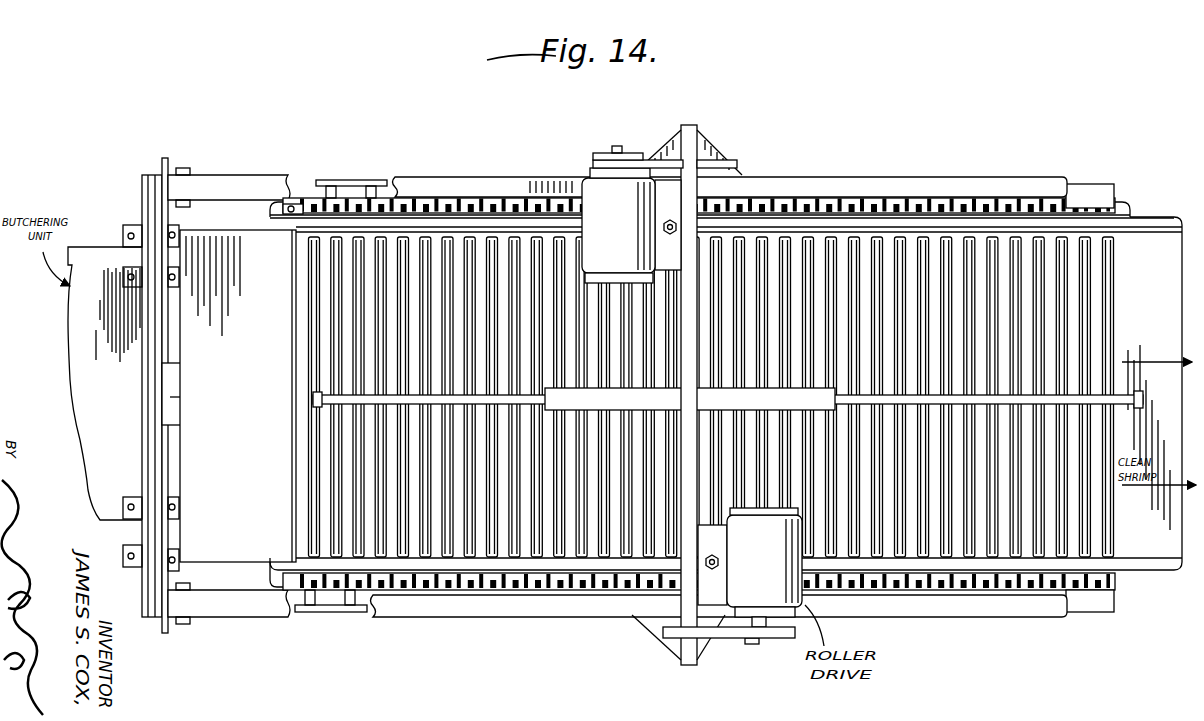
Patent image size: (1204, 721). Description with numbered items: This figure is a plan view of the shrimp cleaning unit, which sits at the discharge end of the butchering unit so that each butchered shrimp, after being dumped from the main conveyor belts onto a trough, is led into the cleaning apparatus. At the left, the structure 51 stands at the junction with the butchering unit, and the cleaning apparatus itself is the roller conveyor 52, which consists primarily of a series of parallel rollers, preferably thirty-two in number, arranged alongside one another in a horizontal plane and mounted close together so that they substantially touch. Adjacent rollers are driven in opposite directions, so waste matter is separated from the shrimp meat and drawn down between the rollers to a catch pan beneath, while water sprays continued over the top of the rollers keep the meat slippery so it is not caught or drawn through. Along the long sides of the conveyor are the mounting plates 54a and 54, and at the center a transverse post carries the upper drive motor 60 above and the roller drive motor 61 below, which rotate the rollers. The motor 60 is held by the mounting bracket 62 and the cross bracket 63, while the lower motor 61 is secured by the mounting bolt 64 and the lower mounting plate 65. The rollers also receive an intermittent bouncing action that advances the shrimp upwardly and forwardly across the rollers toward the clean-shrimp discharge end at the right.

The feed chute / support stand 51 is at (252, 562).
The roller conveyor 52 is at (355, 300).
The lower mounting plate 54 is at (341, 610).
The upper mounting plate 54a is at (348, 180).
The upper drive motor 60 is at (631, 225).
The roller drive motor 61 is at (750, 562).
The motor mounting bracket 62 is at (650, 160).
The cross bracket 63 is at (725, 162).
The mounting bolt 64 is at (748, 638).
The lower mounting plate 65 is at (668, 637).